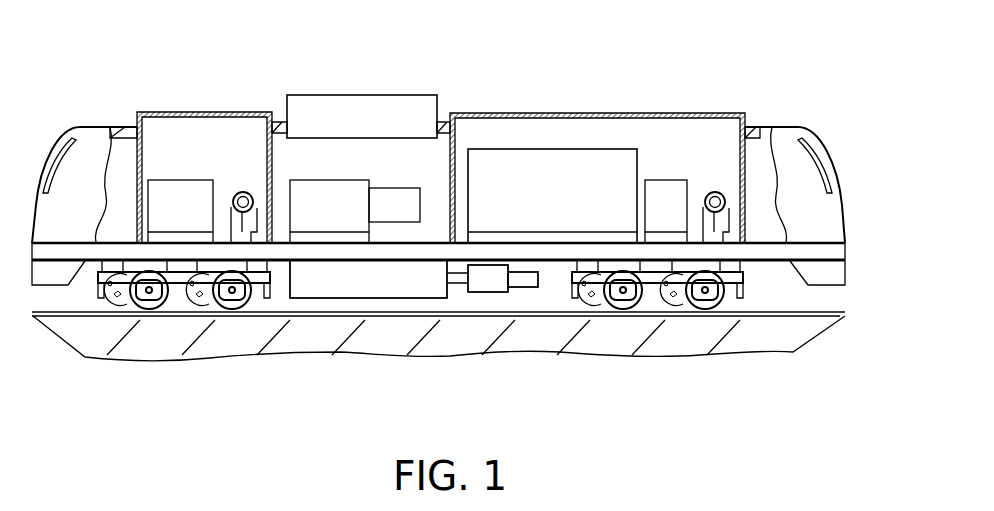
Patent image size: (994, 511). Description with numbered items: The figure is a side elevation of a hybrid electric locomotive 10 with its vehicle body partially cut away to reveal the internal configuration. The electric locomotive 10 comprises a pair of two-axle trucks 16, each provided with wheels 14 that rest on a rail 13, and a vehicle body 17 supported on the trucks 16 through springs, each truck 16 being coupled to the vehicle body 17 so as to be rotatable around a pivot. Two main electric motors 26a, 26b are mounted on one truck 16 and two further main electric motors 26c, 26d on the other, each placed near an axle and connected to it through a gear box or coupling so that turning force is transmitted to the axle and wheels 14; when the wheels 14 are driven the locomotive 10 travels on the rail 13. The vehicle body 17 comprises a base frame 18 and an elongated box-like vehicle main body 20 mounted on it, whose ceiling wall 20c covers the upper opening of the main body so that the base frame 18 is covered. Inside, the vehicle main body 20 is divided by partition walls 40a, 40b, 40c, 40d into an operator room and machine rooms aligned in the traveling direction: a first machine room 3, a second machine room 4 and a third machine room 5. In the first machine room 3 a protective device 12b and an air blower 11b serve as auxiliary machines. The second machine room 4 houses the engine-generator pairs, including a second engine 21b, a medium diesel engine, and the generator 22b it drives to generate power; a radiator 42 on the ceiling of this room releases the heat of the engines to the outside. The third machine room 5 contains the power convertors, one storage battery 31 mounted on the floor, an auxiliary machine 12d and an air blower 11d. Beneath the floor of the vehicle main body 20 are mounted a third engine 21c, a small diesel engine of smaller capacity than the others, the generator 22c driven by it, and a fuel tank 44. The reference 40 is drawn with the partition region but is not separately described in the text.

The hybrid electric locomotive 10 is at (545, 63).
The first machine room 3 is at (206, 138).
The second machine room 4 is at (356, 153).
The third machine room 5 is at (604, 118).
The air blower 11b is at (243, 192).
The air blower 11d is at (716, 191).
The protective device 12b is at (168, 178).
The auxiliary machine 12d is at (672, 180).
The rail 13 is at (380, 306).
The wheels 14 is at (149, 309).
The two-axle truck 16 is at (178, 284).
The vehicle body 17 is at (634, 104).
The base frame 18 is at (558, 262).
The vehicle main body 20 is at (228, 107).
The ceiling wall 20c is at (512, 118).
The second engine 21b is at (322, 186).
The third engine 21c is at (484, 292).
The generator 22b is at (393, 196).
The generator 22c is at (525, 288).
The main electric motor 26a is at (116, 305).
The main electric motor 26b is at (200, 305).
The main electric motor 26c is at (592, 305).
The main electric motor 26d is at (675, 305).
The storage battery 31 is at (560, 152).
The connecting portion 40 is at (397, 233).
The partition wall 40a is at (118, 136).
The partition wall 40b is at (266, 140).
The partition wall 40c is at (463, 144).
The partition wall 40d is at (748, 148).
The radiator 42 is at (397, 104).
The fuel tank 44 is at (322, 288).